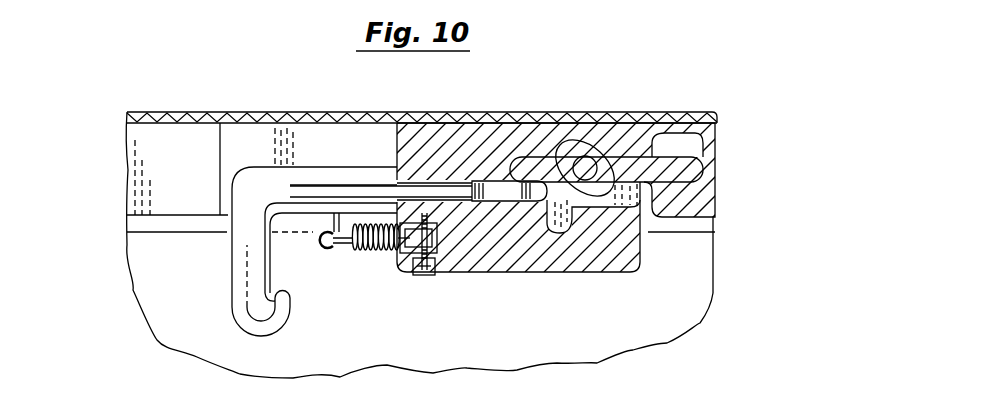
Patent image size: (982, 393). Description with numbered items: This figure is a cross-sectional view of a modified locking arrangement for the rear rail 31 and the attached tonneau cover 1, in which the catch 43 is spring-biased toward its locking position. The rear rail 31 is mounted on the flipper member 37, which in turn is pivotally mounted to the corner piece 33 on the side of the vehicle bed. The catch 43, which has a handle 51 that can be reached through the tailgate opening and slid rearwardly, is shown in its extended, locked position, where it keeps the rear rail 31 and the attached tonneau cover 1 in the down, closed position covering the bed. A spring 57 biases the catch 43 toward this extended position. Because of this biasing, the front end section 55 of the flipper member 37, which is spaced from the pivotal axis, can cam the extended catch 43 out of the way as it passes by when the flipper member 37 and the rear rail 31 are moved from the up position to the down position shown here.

The tonneau cover 1 is at (265, 10).
The rear rail 31 is at (682, 140).
The corner piece 33 is at (521, 272).
The flipper member 37 is at (603, 145).
The catch 43 is at (498, 183).
The handle 51 is at (232, 279).
The front end section 55 is at (538, 165).
The spring 57 is at (368, 246).